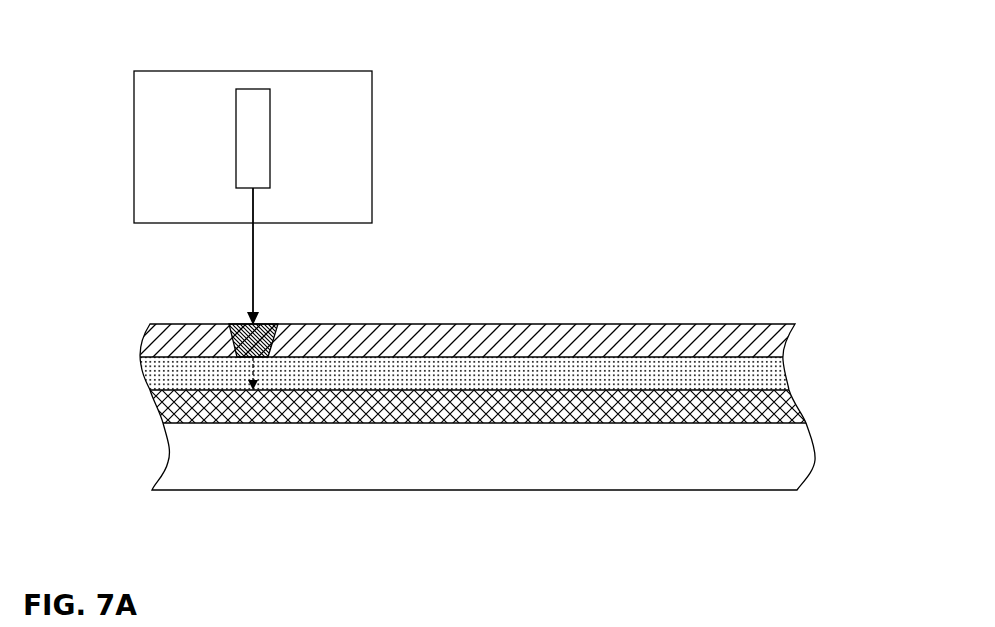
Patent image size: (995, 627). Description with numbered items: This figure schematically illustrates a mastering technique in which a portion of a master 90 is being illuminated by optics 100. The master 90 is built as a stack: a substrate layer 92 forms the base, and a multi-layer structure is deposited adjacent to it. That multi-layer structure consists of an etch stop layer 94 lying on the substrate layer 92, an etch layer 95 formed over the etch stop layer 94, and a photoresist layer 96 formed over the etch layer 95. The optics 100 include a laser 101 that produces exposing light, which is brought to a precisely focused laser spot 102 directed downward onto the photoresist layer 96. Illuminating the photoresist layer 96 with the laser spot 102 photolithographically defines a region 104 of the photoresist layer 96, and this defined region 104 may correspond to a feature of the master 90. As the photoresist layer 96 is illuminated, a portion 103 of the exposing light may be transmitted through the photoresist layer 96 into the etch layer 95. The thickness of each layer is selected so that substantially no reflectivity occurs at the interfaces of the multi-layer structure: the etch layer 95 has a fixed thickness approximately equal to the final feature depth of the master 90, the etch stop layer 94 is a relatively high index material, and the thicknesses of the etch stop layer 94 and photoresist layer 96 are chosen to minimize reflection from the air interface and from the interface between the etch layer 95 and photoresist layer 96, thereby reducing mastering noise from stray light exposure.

The master 90 is at (112, 423).
The substrate layer 92 is at (728, 475).
The etch stop layer 94 is at (783, 410).
The etch layer 95 is at (775, 381).
The photoresist layer 96 is at (713, 338).
The optics 100 is at (134, 123).
The laser 101 is at (270, 150).
The laser spot 102 is at (230, 307).
The portion of the exposing light 103 is at (268, 373).
The photolithographically defined region 104 is at (228, 364).